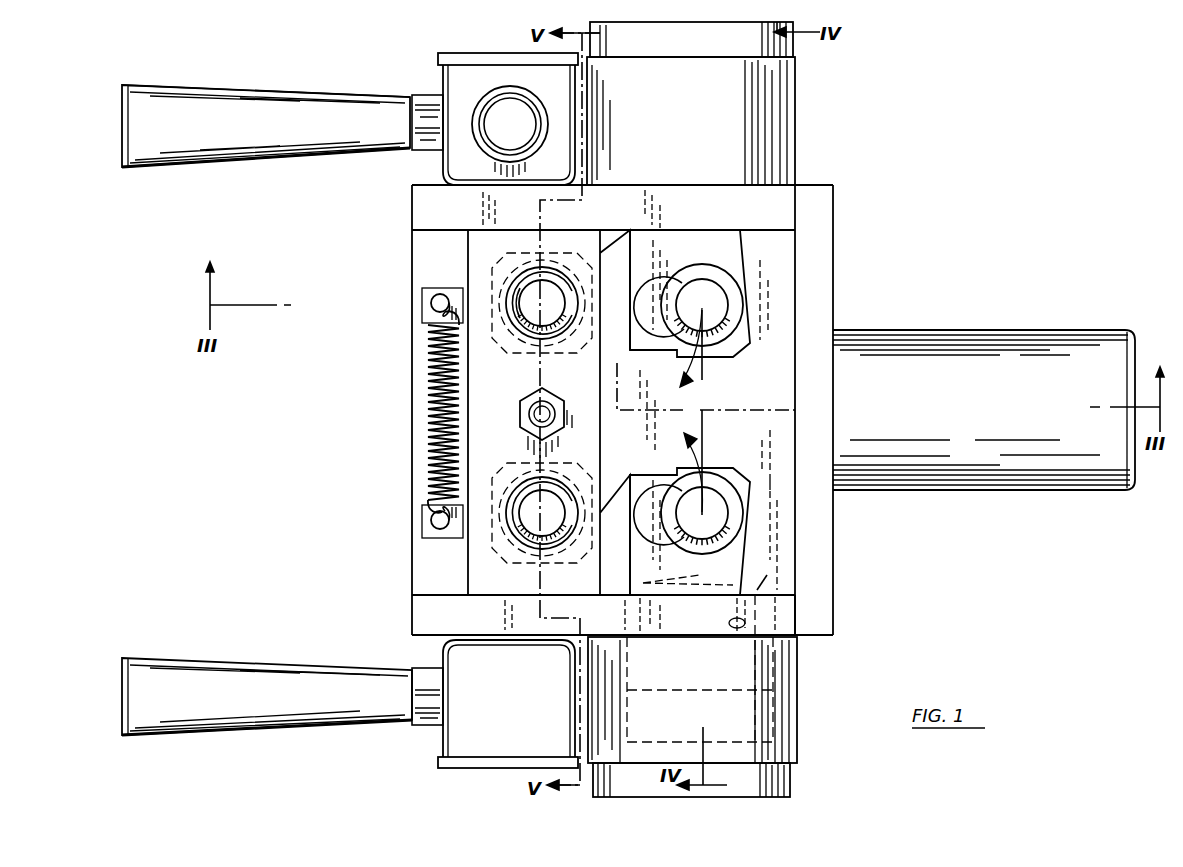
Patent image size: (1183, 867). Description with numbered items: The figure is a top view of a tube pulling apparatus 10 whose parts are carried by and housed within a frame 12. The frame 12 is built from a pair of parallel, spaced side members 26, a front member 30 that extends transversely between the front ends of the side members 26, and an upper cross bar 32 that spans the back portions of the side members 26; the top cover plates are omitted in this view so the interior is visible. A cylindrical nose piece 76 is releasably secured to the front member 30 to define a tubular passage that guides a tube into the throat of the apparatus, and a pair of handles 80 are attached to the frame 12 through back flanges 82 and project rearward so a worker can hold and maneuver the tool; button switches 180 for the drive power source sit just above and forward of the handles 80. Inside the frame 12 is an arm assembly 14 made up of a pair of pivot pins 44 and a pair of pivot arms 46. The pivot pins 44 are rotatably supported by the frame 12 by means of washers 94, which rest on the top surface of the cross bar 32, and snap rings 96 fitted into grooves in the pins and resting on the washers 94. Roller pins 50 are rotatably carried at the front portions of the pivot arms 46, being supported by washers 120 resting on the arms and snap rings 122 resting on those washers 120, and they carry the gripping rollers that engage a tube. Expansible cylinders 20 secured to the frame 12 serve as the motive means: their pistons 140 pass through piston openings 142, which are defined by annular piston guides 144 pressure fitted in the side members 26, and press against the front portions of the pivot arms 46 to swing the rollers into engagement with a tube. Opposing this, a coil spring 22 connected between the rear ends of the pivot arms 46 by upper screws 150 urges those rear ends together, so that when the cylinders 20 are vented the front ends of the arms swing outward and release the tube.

The tube pulling apparatus 10 is at (962, 133).
The frame 12 is at (848, 217).
The arm assembly 14 is at (490, 249).
The expansible cylinders 20 is at (820, 108).
The springs 22 is at (396, 441).
The side members 26 is at (418, 205).
The front member 30 is at (818, 195).
The upper cross bar 32 is at (490, 577).
The pivot pins 44 is at (546, 292).
The pivot arms 46 is at (727, 240).
The roller pins 50 is at (725, 317).
The nose piece 76 is at (984, 410).
The handles 80 is at (267, 410).
The back flanges 82 is at (432, 110).
The washers 94 is at (527, 333).
The snap rings 96 is at (500, 287).
The washers 120 is at (727, 288).
The snap rings 122 is at (727, 302).
The pistons 140 is at (723, 670).
The piston openings 142 is at (745, 623).
The piston guides 144 is at (750, 607).
The upper screws 150 is at (432, 303).
The button switches 180 is at (510, 118).